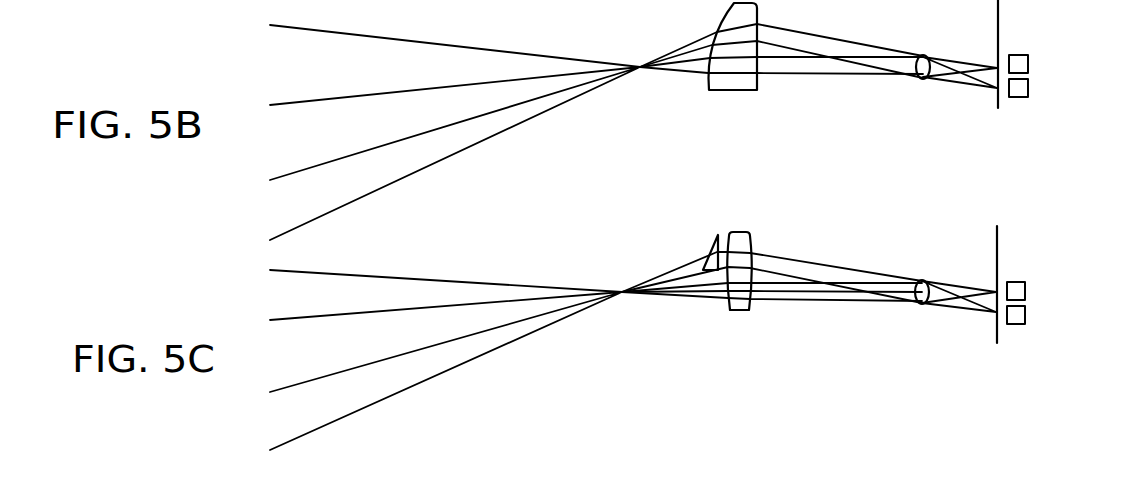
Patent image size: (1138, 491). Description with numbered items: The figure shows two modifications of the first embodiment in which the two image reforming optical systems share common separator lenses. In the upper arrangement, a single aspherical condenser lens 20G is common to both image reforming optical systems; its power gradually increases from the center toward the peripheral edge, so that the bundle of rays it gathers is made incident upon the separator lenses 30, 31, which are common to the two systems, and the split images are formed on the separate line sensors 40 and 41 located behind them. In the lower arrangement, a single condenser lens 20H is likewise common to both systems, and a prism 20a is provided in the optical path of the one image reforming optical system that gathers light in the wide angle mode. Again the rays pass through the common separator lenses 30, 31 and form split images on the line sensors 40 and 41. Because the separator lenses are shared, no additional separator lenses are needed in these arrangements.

In FIG. 5B, the single aspherical condenser lens 20G is at (752, 84).
In FIG. 5C, the single condenser lens 20H is at (743, 306).
In FIG. 5C, the prism 20a is at (713, 247).
In FIG. 5B, the separator lens 30 is at (934, 95).
In FIG. 5C, the separator lens 30 is at (934, 320).
In FIG. 5B, the separator lens 31 is at (921, 80).
In FIG. 5C, the separator lens 31 is at (921, 304).
In FIG. 5B, the line sensor 40 is at (1029, 63).
In FIG. 5C, the line sensor 40 is at (1026, 290).
In FIG. 5B, the line sensor 41 is at (1029, 86).
In FIG. 5C, the line sensor 41 is at (1026, 314).